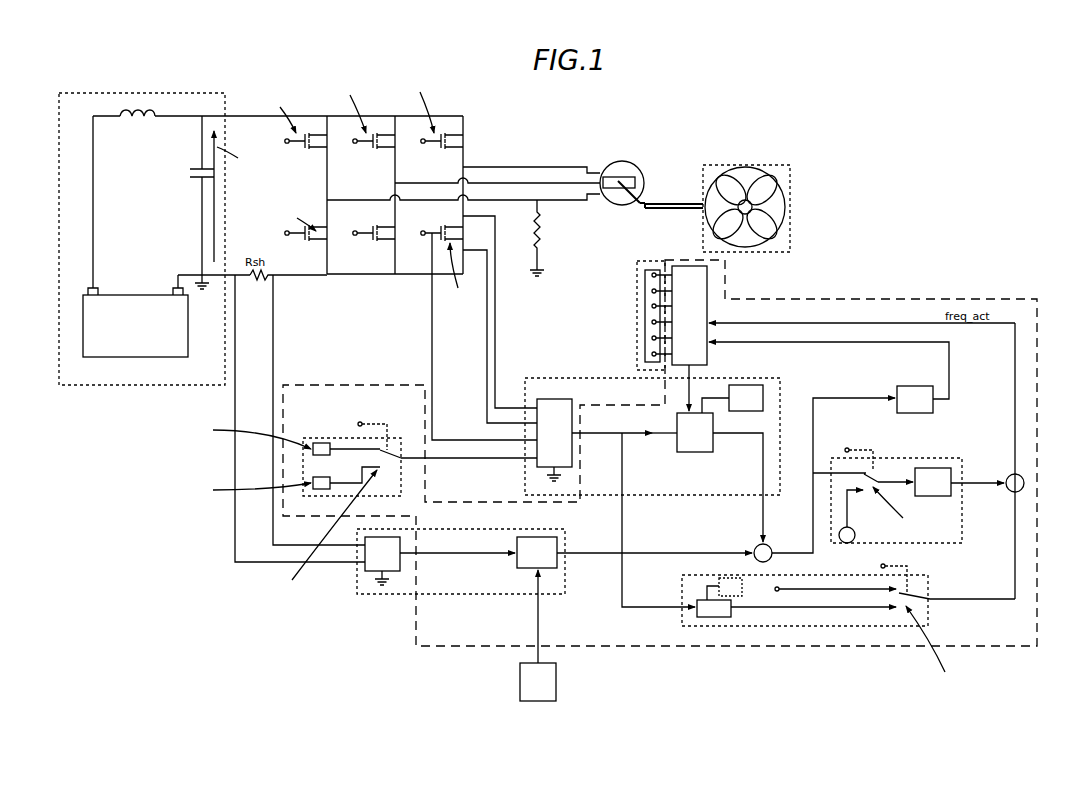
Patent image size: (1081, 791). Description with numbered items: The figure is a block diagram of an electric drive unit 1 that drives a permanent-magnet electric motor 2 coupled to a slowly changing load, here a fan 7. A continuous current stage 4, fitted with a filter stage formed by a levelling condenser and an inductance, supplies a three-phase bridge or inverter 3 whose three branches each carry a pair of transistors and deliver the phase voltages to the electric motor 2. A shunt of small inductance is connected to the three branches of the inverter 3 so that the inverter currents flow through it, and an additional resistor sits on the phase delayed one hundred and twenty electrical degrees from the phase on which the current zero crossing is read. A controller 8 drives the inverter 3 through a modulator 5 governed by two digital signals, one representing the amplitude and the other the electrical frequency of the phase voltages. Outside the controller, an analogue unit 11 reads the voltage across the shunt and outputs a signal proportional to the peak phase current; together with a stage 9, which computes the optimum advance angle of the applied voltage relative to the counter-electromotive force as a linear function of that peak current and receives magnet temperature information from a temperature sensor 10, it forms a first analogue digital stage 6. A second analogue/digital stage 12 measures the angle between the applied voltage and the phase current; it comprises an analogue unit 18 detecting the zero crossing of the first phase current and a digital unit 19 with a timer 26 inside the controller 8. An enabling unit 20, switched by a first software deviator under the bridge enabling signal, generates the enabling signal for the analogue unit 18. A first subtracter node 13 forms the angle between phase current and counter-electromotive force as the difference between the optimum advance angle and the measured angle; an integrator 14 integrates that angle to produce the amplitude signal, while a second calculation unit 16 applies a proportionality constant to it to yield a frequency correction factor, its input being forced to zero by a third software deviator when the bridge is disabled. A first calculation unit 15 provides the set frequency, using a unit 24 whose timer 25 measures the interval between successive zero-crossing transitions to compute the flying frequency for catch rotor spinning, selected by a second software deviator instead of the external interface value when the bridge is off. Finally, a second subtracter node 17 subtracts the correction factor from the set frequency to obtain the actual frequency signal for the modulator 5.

The electric drive unit 1 is at (871, 139).
The electric motor 2 is at (630, 162).
The three-phase bridge or inverter 3 is at (484, 140).
The continuous current stage 4 is at (90, 392).
The modulator 5 is at (672, 336).
The first analogue digital stage 6 is at (387, 599).
The fan 7 is at (769, 184).
The controller 8 is at (906, 296).
The stage gain_Ipk 9 is at (537, 552).
The temperature sensor 10 is at (538, 635).
The analogue unit pk_detect 11 is at (440, 561).
The second analogue/digital stage 12 is at (519, 391).
The first subtracter node 13 is at (755, 537).
The integrator 14 is at (829, 377).
The first calculation unit 15 is at (678, 619).
The second calculation unit 16 is at (908, 486).
The second subtracter node 17 is at (1012, 472).
The analogue unit zc_E-I_detect 18 is at (539, 348).
The digital unit fi_calc 19 is at (720, 477).
The enabling unit 20 is at (323, 499).
The unit freq_calc 24 is at (708, 617).
The timer 25 is at (733, 594).
The timer 26 is at (732, 399).